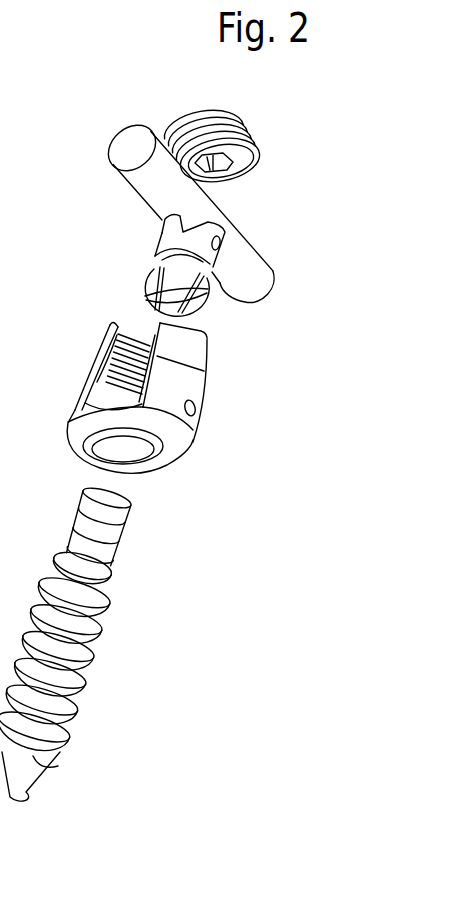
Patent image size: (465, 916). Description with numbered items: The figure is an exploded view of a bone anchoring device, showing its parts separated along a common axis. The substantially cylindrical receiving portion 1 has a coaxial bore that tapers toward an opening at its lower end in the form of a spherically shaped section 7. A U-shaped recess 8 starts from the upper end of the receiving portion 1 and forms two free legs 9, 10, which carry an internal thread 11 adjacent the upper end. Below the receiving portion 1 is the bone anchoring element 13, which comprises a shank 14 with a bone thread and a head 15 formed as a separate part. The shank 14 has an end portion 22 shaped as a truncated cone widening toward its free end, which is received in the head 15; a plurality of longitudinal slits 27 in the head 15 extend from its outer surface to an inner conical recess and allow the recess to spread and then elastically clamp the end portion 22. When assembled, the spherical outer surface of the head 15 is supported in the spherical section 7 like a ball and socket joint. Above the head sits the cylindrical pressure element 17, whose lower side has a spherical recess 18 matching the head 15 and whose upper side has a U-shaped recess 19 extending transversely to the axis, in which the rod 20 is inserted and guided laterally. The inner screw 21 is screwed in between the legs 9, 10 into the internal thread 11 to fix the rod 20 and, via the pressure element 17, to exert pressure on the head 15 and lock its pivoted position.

The receiving portion 1 is at (143, 396).
The spherically shaped section 7 is at (0, 60).
The U-shaped recess 8 is at (101, 379).
The free leg 9 is at (102, 338).
The free leg 10 is at (207, 370).
The internal thread 11 is at (117, 398).
The bone anchoring element 13 is at (101, 404).
The shank 14 is at (105, 573).
The head 15 is at (179, 306).
The pressure element 17 is at (182, 267).
The spherical recess 18 is at (154, 253).
The U-shaped recess 19 is at (157, 214).
The rod 20 is at (263, 270).
The inner screw 21 is at (242, 132).
The end portion 22 is at (78, 498).
The longitudinal slits 27 is at (146, 283).